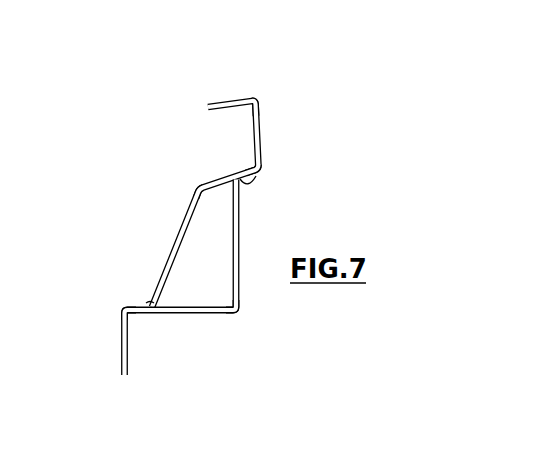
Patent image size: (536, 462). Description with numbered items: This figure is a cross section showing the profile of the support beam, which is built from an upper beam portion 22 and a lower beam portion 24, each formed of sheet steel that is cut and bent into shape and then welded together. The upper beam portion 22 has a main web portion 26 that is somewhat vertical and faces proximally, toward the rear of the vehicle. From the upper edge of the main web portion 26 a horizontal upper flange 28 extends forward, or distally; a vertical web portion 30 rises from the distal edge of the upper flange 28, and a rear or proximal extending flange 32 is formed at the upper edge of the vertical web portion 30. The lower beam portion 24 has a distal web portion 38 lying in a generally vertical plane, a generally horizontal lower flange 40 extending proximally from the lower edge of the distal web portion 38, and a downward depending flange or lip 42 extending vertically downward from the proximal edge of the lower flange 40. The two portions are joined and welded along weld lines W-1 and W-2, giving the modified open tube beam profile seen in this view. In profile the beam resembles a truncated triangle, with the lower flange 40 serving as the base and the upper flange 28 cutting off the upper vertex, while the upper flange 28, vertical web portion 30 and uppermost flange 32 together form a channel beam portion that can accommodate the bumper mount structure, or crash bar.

The upper beam portion 22 is at (161, 199).
The lower beam portion 24 is at (265, 312).
The main web portion 26 is at (170, 256).
The upper flange 28 is at (213, 178).
The vertical web portion 30 is at (261, 131).
The proximal extending flange 32 is at (228, 100).
The distal web portion 38 is at (241, 240).
The lower flange 40 is at (217, 313).
The downward depending flange or lip 42 is at (128, 360).
The weld line W-1 is at (143, 304).
The weld line W-2 is at (262, 183).